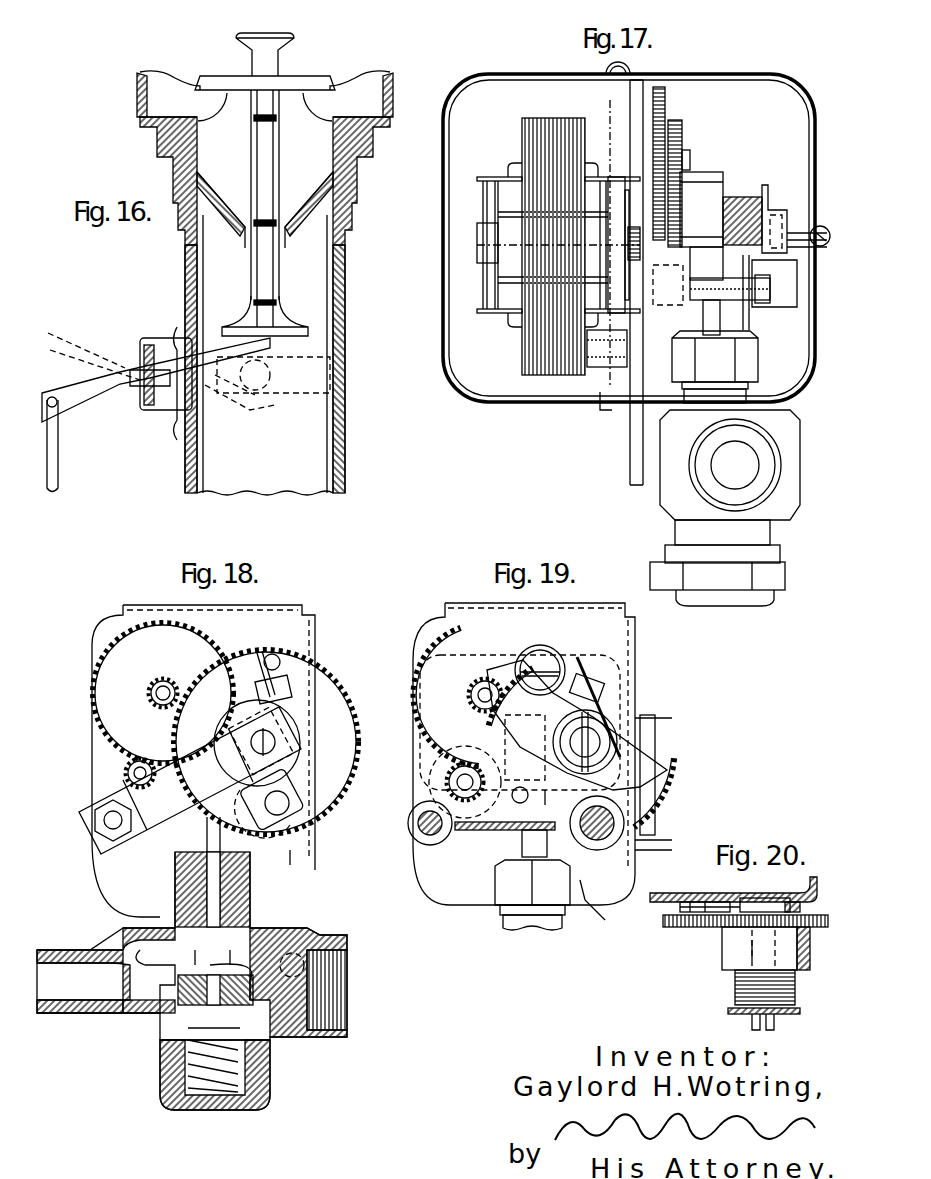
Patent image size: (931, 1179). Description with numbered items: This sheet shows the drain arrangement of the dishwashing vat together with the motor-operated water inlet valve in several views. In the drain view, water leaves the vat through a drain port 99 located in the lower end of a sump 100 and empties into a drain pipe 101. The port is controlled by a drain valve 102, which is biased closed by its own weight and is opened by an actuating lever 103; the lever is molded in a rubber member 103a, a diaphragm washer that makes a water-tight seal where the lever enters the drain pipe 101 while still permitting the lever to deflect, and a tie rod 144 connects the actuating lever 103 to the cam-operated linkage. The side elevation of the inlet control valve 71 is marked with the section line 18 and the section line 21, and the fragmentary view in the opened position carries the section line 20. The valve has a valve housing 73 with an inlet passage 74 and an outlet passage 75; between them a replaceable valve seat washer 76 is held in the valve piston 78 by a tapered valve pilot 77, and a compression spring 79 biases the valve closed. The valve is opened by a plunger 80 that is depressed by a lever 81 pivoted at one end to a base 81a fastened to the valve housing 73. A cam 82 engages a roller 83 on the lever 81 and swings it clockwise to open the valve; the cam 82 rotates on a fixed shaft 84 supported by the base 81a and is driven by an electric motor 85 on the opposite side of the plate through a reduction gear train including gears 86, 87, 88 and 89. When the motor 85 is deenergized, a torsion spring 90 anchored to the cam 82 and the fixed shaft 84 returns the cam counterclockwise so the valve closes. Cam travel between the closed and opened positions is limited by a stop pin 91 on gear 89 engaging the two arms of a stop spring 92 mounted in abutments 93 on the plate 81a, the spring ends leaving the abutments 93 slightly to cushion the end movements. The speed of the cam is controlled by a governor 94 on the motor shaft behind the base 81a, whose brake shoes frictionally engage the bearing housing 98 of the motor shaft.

In FIG. 16, the sump 100 is at (137, 88).
In FIG. 16, the drain valve 102 is at (338, 80).
In FIG. 16, the drain port 99 is at (330, 126).
In FIG. 16, the drain pipe 101 is at (345, 446).
In FIG. 16, the actuating lever 103 is at (112, 398).
In FIG. 16, the rubber member 103a is at (147, 410).
In FIG. 16, the tie rod 144 is at (60, 476).
In FIG. 17, the section line 18— 18 is at (715, 45).
In FIG. 17, the section line 21— 21 is at (604, 383).
In FIG. 17, the electric motor 85 is at (516, 165).
In FIG. 17, the governor 94 is at (614, 195).
In FIG. 17, the bearing housing 98 is at (634, 232).
In FIG. 17, the gear 86 is at (645, 292).
In FIG. 18, the gear 86 is at (122, 770).
In FIG. 19, the gear 86 is at (446, 782).
In FIG. 17, the gear 87 is at (666, 103).
In FIG. 18, the gear 87 is at (95, 706).
In FIG. 19, the gear 87 is at (425, 718).
In FIG. 17, the gear 89 is at (683, 127).
In FIG. 18, the gear 89 is at (240, 652).
In FIG. 19, the gear 89 is at (515, 678).
In FIG. 20, the gear 89 is at (668, 926).
In FIG. 17, the gear 88 is at (686, 148).
In FIG. 18, the gear 88 is at (163, 678).
In FIG. 19, the gear 88 is at (470, 696).
In FIG. 17, the cam 82 is at (703, 172).
In FIG. 18, the cam 82 is at (228, 725).
In FIG. 19, the cam 82 is at (620, 785).
In FIG. 20, the cam 82 is at (722, 946).
In FIG. 17, the torsion spring 90 is at (742, 197).
In FIG. 18, the torsion spring 90 is at (245, 720).
In FIG. 19, the torsion spring 90 is at (630, 770).
In FIG. 20, the torsion spring 90 is at (735, 995).
In FIG. 17, the fixed shaft 84 is at (775, 208).
In FIG. 18, the fixed shaft 84 is at (276, 742).
In FIG. 19, the fixed shaft 84 is at (570, 742).
In FIG. 20, the fixed shaft 84 is at (752, 955).
In FIG. 17, the roller 83 is at (692, 320).
In FIG. 18, the roller 83 is at (299, 855).
In FIG. 19, the roller 83 is at (596, 900).
In FIG. 17, the plunger 80 is at (703, 305).
In FIG. 18, the plunger 80 is at (228, 848).
In FIG. 19, the plunger 80 is at (522, 848).
In FIG. 17, the lever 81 is at (740, 305).
In FIG. 18, the lever 81 is at (203, 826).
In FIG. 19, the lever 81 is at (490, 832).
In FIG. 17, the base 81a is at (640, 470).
In FIG. 18, the base 81a is at (318, 634).
In FIG. 19, the base 81a is at (632, 650).
In FIG. 20, the base 81a is at (662, 893).
In FIG. 17, the control valve 71 is at (605, 415).
In FIG. 17, the outlet passage 75 is at (752, 462).
In FIG. 18, the outlet passage 75 is at (76, 1000).
In FIG. 17, the valve housing 73 is at (783, 481).
In FIG. 18, the valve housing 73 is at (268, 930).
In FIG. 19, the valve housing 73 is at (510, 930).
In FIG. 18, the stop pin 91 is at (267, 653).
In FIG. 19, the stop pin 91 is at (520, 800).
In FIG. 20, the stop pin 91 is at (718, 904).
In FIG. 18, the abutments 93 is at (290, 685).
In FIG. 19, the abutments 93 is at (605, 683).
In FIG. 20, the abutments 93 is at (760, 900).
In FIG. 18, the stop spring 92 is at (285, 716).
In FIG. 19, the stop spring 92 is at (605, 700).
In FIG. 20, the stop spring 92 is at (680, 908).
In FIG. 18, the inlet passage 74 is at (347, 975).
In FIG. 18, the valve pilot 77 is at (203, 951).
In FIG. 18, the valve seat washer 76 is at (258, 1000).
In FIG. 18, the valve piston 78 is at (155, 1020).
In FIG. 18, the compression spring 79 is at (205, 1095).
In FIG. 19, the section line 20— 20 is at (682, 738).